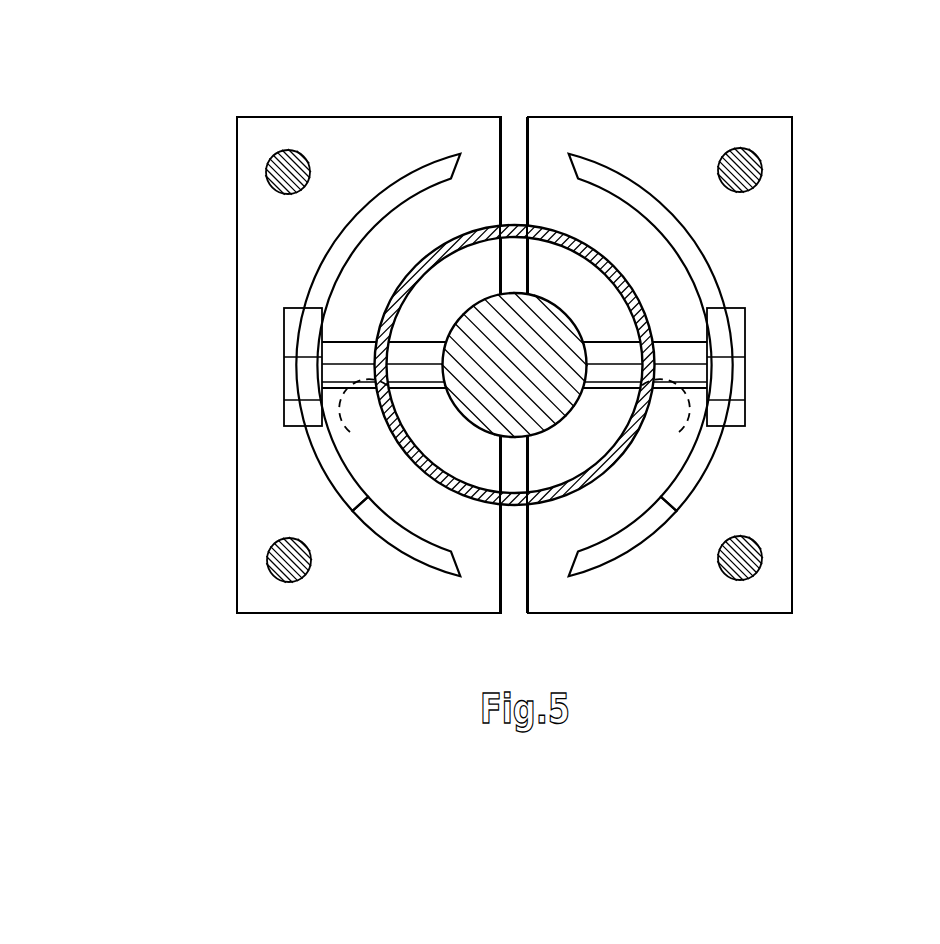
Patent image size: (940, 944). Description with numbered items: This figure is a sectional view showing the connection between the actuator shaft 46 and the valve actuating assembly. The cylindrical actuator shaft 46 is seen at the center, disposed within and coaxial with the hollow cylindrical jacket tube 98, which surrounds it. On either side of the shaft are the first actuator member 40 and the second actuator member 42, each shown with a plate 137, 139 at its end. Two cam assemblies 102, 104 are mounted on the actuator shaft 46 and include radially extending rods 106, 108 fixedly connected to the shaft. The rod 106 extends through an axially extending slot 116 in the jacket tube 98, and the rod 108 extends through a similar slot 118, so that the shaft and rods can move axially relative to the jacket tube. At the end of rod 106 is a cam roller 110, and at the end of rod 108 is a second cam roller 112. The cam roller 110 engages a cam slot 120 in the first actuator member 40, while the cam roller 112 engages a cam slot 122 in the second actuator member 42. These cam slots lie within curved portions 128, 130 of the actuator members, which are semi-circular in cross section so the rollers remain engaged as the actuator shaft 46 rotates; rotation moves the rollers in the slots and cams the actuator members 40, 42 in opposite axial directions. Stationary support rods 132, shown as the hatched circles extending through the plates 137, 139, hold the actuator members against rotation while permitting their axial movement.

The actuator member 40 is at (393, 86).
The actuator member 42 is at (666, 86).
The actuator shaft 46 is at (530, 342).
The jacket tube 98 is at (487, 495).
The cam assembly 102 is at (263, 388).
The cam assembly 104 is at (778, 365).
The rod 106 is at (352, 353).
The rod 108 is at (676, 353).
The cam roller 110 is at (290, 313).
The cam roller 112 is at (748, 308).
The slot 116 is at (363, 420).
The slot 118 is at (665, 420).
The cam slot 120 is at (327, 260).
The cam slot 122 is at (707, 270).
The curved portion 128 is at (427, 563).
The curved portion 130 is at (627, 546).
The support rods 132 is at (287, 165).
The plate 137 is at (270, 502).
The plate 139 is at (758, 487).